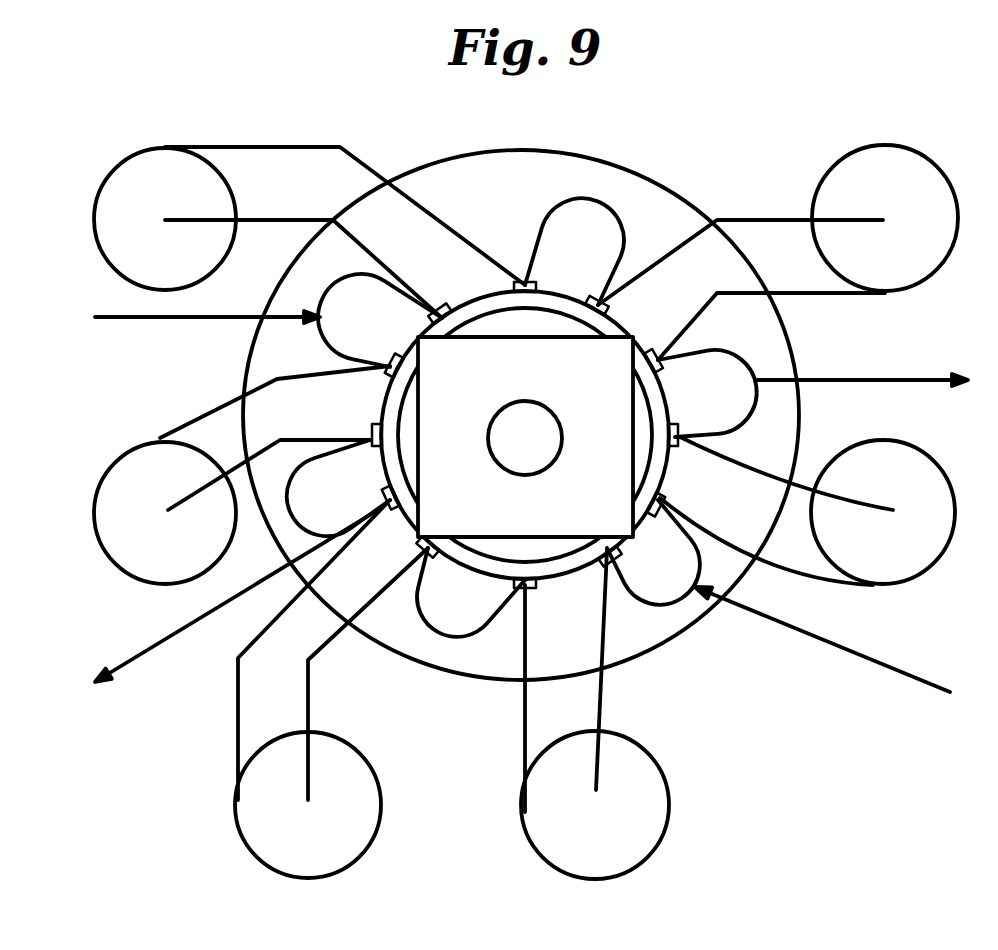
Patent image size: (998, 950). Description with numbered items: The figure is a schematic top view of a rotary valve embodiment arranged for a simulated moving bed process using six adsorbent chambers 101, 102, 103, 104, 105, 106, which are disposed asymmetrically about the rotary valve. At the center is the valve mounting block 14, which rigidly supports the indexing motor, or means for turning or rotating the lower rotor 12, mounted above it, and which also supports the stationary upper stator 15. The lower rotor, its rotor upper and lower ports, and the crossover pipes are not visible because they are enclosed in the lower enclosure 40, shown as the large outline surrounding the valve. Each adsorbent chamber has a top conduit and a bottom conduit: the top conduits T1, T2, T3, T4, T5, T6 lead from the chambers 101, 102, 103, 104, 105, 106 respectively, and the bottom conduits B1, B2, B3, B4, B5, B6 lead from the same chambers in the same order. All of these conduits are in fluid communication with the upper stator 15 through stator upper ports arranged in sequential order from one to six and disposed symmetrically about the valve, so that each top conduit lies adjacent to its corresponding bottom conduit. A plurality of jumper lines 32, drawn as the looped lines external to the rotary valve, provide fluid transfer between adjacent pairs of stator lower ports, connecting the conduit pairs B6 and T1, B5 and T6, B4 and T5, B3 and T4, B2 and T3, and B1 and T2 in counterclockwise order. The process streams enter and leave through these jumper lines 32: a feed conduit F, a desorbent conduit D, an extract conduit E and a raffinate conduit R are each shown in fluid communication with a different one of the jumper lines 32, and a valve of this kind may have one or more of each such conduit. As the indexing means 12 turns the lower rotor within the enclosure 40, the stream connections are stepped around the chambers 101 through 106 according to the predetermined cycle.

The means for turning or rotating the lower rotor 12 is at (562, 438).
The valve mounting block 14 is at (487, 540).
The upper stator 15 is at (622, 330).
The jumper lines 32 is at (545, 212).
The lower enclosure 40 is at (658, 168).
The adsorbent chamber 101 is at (165, 219).
The adsorbent chamber 102 is at (885, 218).
The adsorbent chamber 103 is at (883, 512).
The adsorbent chamber 104 is at (595, 805).
The adsorbent chamber 105 is at (308, 805).
The adsorbent chamber 106 is at (165, 513).
The top conduit T1 is at (270, 220).
The top conduit T2 is at (735, 220).
The top conduit T3 is at (705, 448).
The top conduit T4 is at (612, 718).
The top conduit T5 is at (308, 718).
The top conduit T6 is at (285, 440).
The bottom conduit B1 is at (355, 144).
The bottom conduit B2 is at (752, 293).
The bottom conduit B3 is at (808, 570).
The bottom conduit B4 is at (523, 712).
The bottom conduit B5 is at (236, 740).
The bottom conduit B6 is at (222, 400).
The desorbent conduit D is at (172, 318).
The extract conduit E is at (135, 647).
The feed conduit F is at (903, 668).
The raffinate conduit R is at (912, 380).